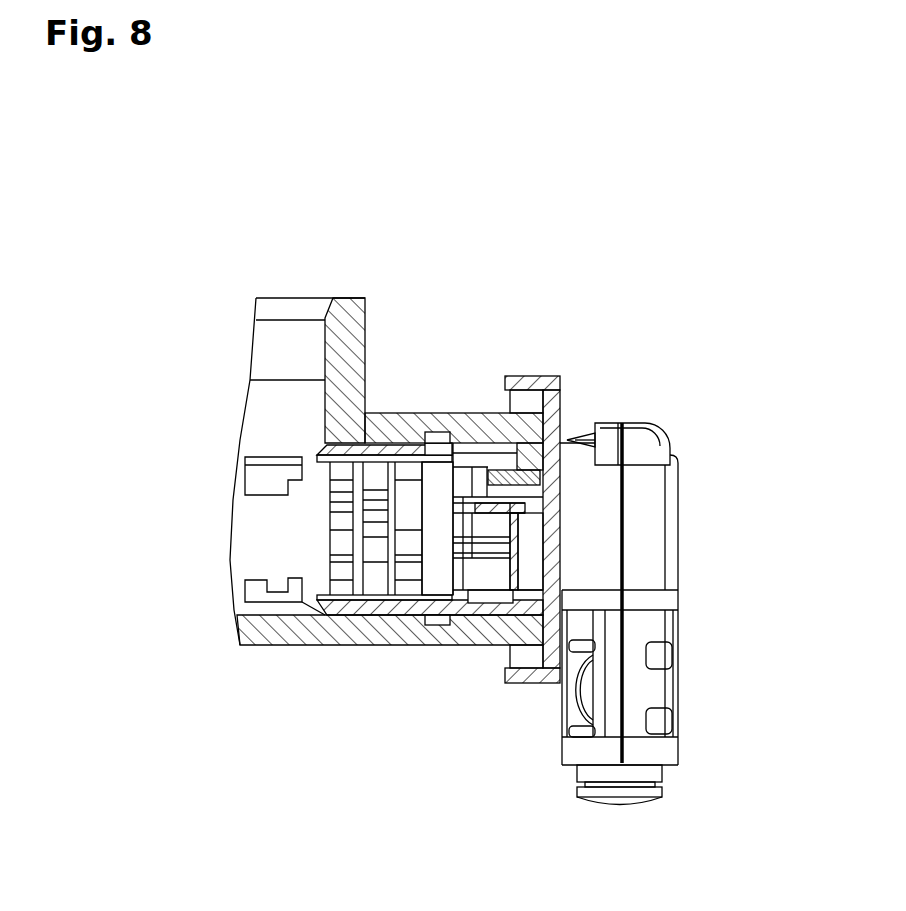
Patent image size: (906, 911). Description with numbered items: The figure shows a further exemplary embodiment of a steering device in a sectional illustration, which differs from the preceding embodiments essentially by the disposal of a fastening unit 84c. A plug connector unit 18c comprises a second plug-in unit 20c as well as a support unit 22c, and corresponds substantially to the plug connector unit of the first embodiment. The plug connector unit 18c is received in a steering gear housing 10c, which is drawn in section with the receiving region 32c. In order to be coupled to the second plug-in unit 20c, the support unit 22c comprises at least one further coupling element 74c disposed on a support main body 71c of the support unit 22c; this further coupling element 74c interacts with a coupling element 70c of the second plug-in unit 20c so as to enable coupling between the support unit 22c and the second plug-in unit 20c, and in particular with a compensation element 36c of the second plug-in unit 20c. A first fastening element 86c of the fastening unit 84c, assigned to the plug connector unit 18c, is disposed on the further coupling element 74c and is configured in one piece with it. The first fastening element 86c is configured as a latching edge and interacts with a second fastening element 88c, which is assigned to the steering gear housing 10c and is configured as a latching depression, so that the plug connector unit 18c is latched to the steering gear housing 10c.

The steering gear housing 10c is at (418, 670).
The plug connector unit 18c is at (648, 278).
The second plug-in unit 20c is at (543, 376).
The support unit 22c is at (610, 385).
The receptacle 32c is at (250, 537).
The compensation element 36c is at (435, 585).
The coupling element 70c is at (488, 445).
The support main body 71c is at (668, 523).
The further coupling element 74c is at (385, 443).
The fastening unit 84c is at (588, 240).
The first fastening element 86c is at (438, 467).
The second fastening element 88c is at (428, 423).